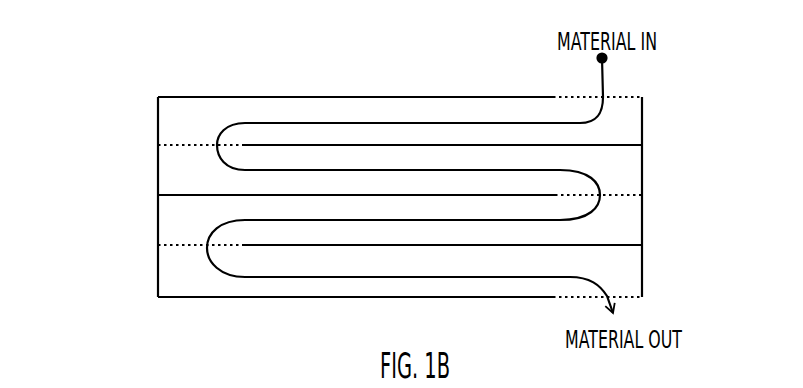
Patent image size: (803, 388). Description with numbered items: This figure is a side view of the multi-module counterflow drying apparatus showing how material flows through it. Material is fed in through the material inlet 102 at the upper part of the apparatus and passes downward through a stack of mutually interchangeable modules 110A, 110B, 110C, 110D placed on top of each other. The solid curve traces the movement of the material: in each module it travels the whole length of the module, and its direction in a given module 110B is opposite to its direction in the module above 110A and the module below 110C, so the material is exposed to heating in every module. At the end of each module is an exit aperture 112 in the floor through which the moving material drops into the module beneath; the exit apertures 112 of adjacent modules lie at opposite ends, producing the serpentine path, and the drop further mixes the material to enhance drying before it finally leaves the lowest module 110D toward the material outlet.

The material inlet 102 is at (628, 92).
The module 110A is at (157, 118).
The module 110B is at (157, 170).
The module 110C is at (157, 222).
The module 110D is at (157, 272).
The exit aperture 112 is at (182, 239).